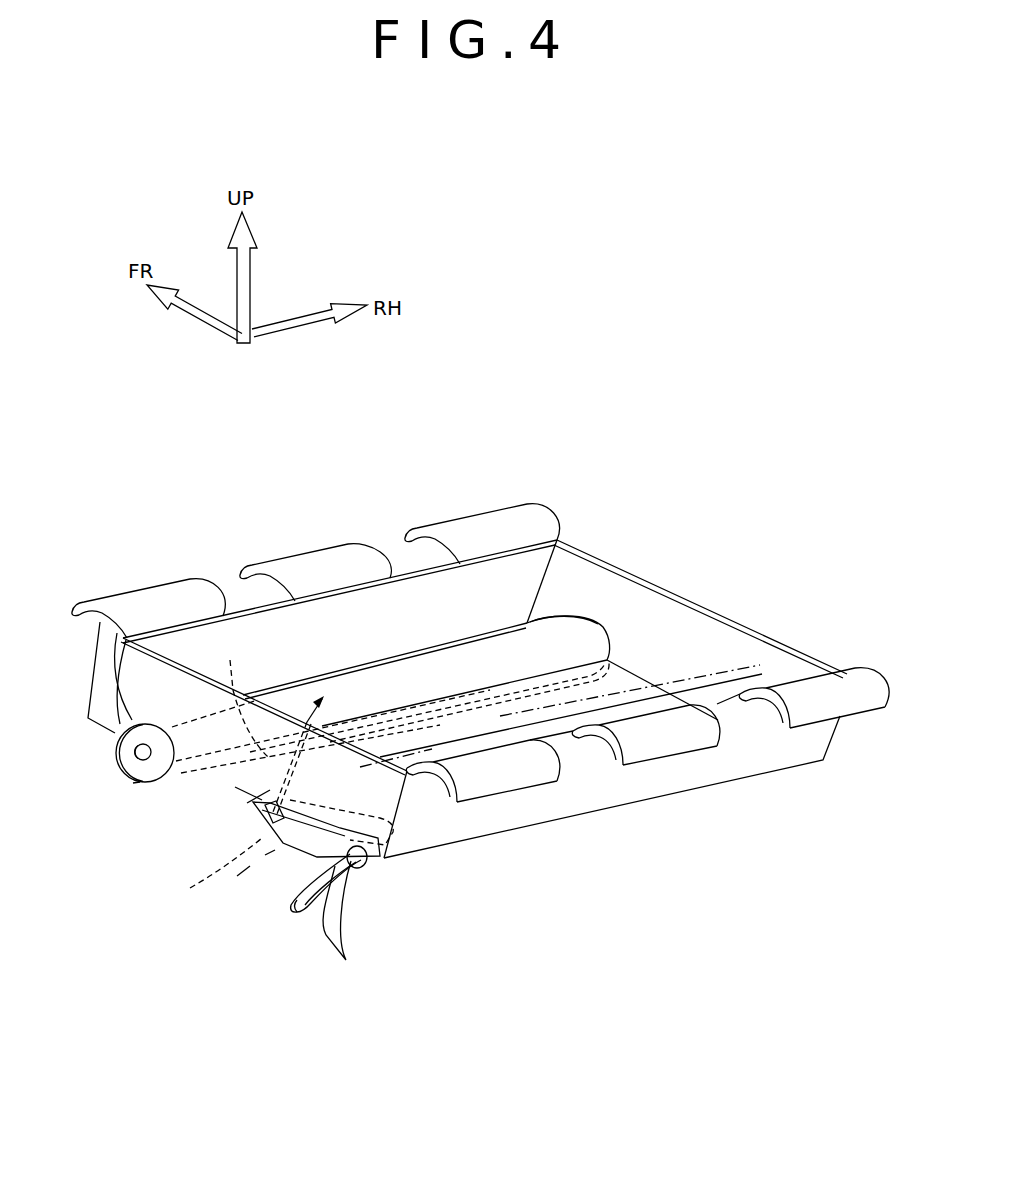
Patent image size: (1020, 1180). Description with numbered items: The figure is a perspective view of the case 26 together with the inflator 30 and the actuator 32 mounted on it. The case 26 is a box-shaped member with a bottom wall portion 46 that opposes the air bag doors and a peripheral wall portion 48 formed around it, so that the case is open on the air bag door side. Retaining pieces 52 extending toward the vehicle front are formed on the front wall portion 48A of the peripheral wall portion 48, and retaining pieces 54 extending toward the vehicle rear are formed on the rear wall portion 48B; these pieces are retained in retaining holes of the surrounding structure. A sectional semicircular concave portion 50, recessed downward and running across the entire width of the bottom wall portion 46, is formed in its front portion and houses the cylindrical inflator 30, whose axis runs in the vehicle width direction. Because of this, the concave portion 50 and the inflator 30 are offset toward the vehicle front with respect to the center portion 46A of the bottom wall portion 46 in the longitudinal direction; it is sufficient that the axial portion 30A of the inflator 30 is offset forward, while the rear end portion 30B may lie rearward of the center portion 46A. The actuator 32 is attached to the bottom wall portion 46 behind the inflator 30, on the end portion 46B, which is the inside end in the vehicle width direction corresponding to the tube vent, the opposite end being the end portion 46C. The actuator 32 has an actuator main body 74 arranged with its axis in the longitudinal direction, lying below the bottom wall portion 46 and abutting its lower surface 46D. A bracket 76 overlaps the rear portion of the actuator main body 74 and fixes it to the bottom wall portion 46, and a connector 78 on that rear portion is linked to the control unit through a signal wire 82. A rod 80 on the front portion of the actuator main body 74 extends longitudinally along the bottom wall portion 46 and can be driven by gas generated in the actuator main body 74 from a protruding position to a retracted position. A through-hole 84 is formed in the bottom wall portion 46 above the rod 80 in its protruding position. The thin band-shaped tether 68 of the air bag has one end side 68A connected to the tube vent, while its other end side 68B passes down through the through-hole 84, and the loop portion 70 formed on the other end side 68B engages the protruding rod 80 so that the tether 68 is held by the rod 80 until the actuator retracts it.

The case 26 is at (94, 702).
The inflator 30 is at (132, 721).
The axial portion 30A is at (133, 753).
The rear end portion 30B is at (175, 756).
The actuator 32 is at (273, 857).
The bottom wall portion 46 is at (422, 715).
The center portion 46A is at (247, 803).
The end portion 46B is at (235, 696).
The end portion 46C is at (637, 680).
The lower surface 46D is at (235, 787).
The peripheral wall portion 48 is at (450, 847).
The front wall portion 48A is at (248, 620).
The rear wall portion 48B is at (637, 787).
The concave portion 50 is at (133, 783).
The retaining pieces 52 is at (142, 587).
The retaining pieces 54 is at (520, 783).
The tether 68 is at (303, 700).
The one end side 68A is at (325, 707).
The other end side 68B is at (210, 880).
The loop portion 70 is at (265, 855).
The actuator main body 74 is at (285, 883).
The bracket 76 is at (292, 905).
The connector 78 is at (367, 872).
The rod 80 is at (237, 876).
The signal wire 82 is at (338, 945).
The through-hole 84 is at (298, 782).